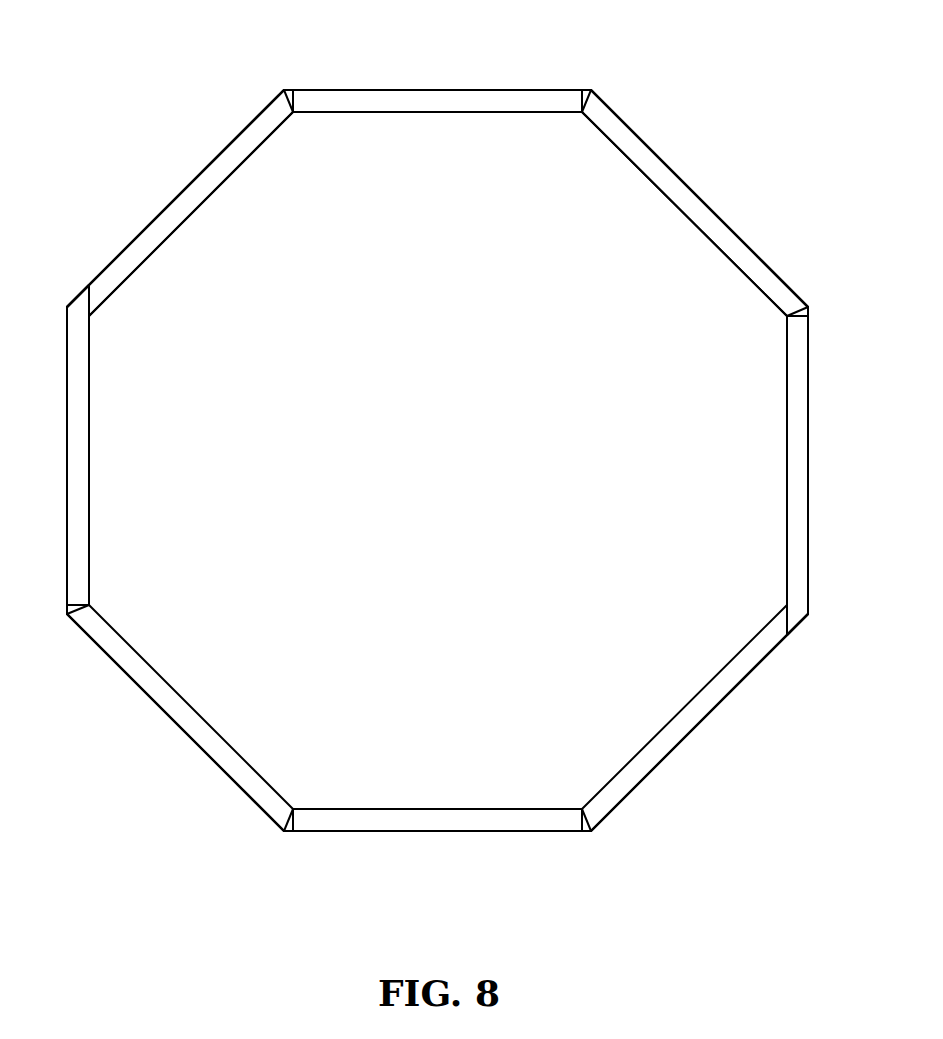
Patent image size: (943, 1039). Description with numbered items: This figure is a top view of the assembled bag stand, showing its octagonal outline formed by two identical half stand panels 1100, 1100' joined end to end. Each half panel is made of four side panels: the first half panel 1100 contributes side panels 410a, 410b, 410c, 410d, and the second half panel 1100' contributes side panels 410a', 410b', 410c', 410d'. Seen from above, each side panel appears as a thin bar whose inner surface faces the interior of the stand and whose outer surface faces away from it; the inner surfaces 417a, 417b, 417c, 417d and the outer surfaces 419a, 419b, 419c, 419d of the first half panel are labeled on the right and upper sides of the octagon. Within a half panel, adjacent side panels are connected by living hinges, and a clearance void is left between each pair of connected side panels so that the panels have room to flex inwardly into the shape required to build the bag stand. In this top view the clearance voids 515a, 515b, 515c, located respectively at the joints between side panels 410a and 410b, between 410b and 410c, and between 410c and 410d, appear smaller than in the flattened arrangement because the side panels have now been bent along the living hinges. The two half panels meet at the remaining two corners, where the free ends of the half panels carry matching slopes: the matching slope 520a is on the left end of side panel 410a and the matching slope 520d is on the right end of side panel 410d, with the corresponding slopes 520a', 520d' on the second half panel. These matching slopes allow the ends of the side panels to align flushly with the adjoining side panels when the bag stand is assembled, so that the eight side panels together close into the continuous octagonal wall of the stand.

The half stand panel 1100 is at (437, 416).
The half stand panel 1100' is at (437, 466).
The side panel 410a is at (756, 471).
The side panel 410a' is at (123, 449).
The side panel 410b is at (695, 203).
The side panel 410b' is at (180, 722).
The side panel 410c is at (437, 65).
The side panel 410c' is at (437, 864).
The side panel 410d is at (180, 203).
The side panel 410d' is at (695, 748).
The inner surface 417a is at (786, 447).
The inner surface 417b is at (694, 226).
The inner surface 417c is at (428, 118).
The inner surface 417d is at (226, 192).
The outer surface 419a is at (813, 400).
The outer surface 419b is at (668, 164).
The outer surface 419c is at (533, 50).
The outer surface 419d is at (212, 158).
The clearance void 515a is at (807, 303).
The clearance void 515b is at (592, 90).
The clearance void 515c is at (288, 89).
The matching slope 520a is at (809, 651).
The matching slope 520a' is at (65, 254).
The matching slope 520d is at (93, 235).
The matching slope 520d' is at (776, 673).